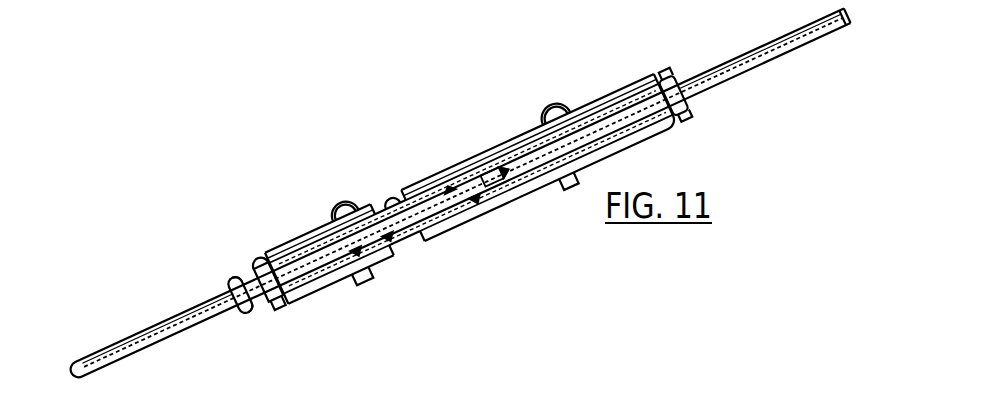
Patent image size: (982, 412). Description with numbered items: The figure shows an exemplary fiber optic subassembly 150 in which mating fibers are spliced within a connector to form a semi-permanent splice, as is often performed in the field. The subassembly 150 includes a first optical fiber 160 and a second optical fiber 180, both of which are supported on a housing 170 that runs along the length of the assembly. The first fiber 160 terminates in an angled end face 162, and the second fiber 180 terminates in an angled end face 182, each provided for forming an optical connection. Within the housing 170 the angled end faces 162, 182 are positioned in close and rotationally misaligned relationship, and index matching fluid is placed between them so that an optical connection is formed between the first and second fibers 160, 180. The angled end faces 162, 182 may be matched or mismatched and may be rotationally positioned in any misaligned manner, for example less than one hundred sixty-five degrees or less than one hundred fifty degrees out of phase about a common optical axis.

The fiber optic subassembly 150 is at (514, 80).
The first optical fiber 160 is at (440, 200).
The angled end face 162 is at (455, 202).
The housing 170 is at (407, 187).
The second optical fiber 180 is at (491, 179).
The angled end face 182 is at (481, 204).